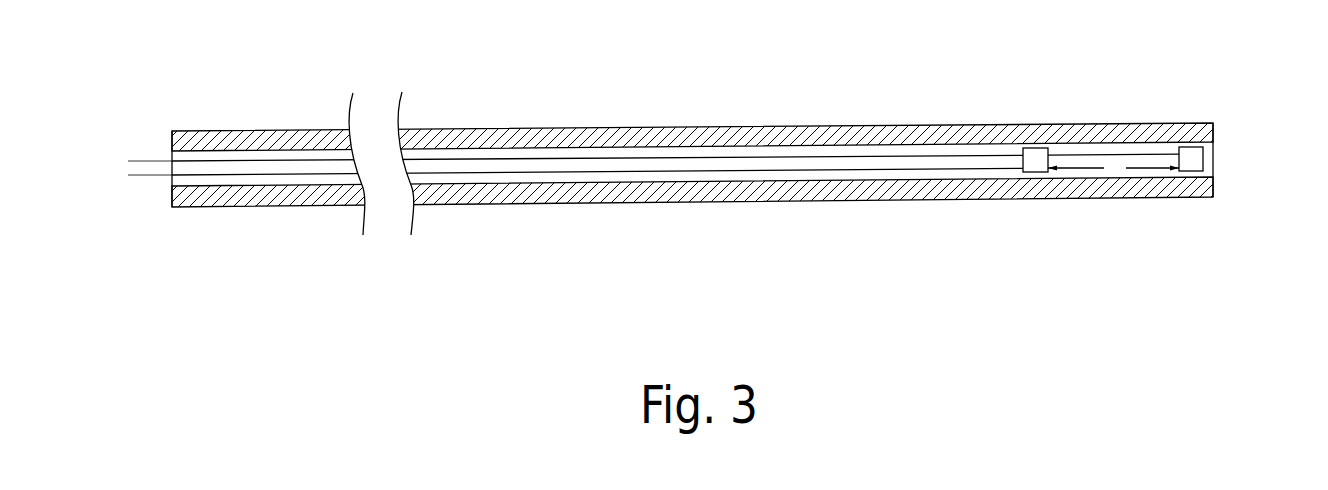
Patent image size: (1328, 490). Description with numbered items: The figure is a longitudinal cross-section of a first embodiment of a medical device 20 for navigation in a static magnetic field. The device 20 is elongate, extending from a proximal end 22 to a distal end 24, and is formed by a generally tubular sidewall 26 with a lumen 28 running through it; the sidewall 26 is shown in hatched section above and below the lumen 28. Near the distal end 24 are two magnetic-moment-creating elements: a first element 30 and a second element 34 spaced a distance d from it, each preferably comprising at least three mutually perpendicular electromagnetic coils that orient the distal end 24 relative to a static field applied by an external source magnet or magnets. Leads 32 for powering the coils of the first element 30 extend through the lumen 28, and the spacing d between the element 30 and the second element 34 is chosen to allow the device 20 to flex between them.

The medical device 20 is at (700, 192).
The proximal end 22 is at (151, 212).
The distal end 24 is at (1232, 128).
The tubular sidewall 26 is at (815, 127).
The lumen 28 is at (877, 177).
The element for selectively creating a magnetic moment 30 is at (1192, 168).
The leads 32 is at (1143, 152).
The second element 34 is at (1039, 148).